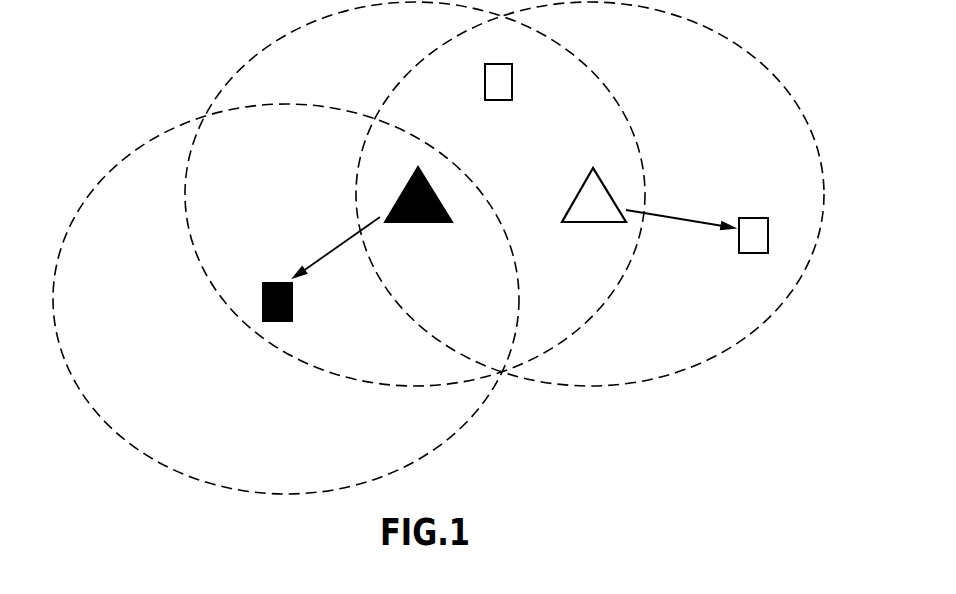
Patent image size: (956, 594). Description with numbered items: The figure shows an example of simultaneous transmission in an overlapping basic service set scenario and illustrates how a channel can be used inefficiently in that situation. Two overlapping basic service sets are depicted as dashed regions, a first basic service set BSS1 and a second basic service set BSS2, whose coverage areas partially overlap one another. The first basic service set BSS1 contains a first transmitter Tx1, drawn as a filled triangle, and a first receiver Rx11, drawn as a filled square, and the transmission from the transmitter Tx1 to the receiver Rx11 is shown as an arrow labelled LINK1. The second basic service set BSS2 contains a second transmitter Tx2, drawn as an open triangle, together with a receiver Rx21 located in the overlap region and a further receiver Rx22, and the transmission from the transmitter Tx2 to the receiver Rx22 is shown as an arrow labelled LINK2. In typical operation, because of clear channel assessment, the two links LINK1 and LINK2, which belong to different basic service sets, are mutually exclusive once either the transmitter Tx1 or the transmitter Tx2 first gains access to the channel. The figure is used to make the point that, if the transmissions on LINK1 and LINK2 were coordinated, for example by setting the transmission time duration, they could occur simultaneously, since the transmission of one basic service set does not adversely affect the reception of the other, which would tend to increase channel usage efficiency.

The first basic service set BSS1 is at (290, 33).
The second basic service set BSS2 is at (716, 37).
The first transmitter Tx1 is at (418, 208).
The second transmitter Tx2 is at (594, 209).
The first receiver of the first BSS Rx11 is at (284, 316).
The first receiver of the second BSS Rx21 is at (506, 96).
The second receiver of the second BSS Rx22 is at (760, 249).
The first link LINK1 is at (358, 231).
The second link LINK2 is at (652, 214).